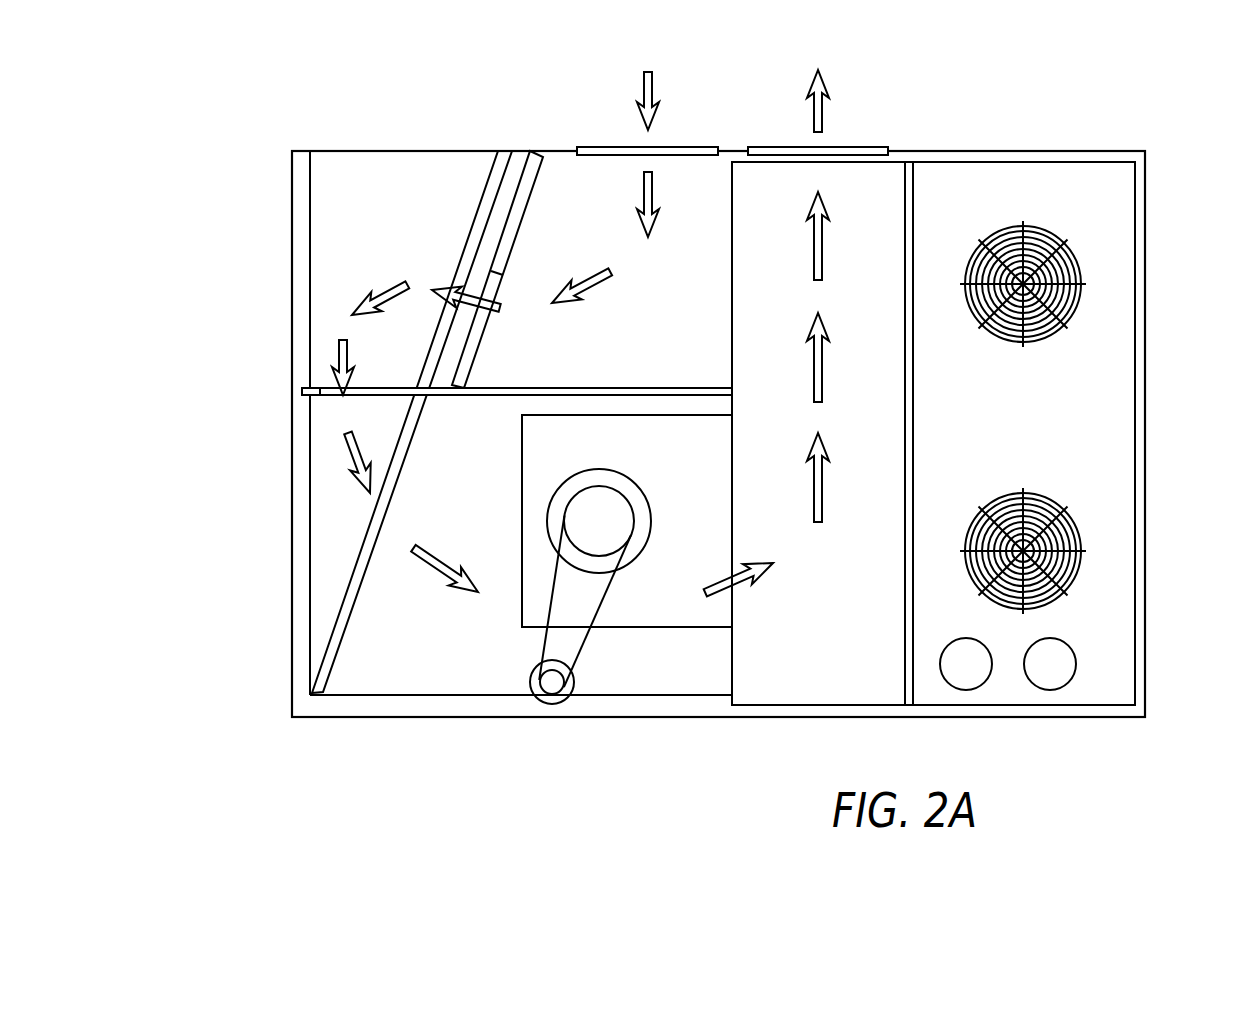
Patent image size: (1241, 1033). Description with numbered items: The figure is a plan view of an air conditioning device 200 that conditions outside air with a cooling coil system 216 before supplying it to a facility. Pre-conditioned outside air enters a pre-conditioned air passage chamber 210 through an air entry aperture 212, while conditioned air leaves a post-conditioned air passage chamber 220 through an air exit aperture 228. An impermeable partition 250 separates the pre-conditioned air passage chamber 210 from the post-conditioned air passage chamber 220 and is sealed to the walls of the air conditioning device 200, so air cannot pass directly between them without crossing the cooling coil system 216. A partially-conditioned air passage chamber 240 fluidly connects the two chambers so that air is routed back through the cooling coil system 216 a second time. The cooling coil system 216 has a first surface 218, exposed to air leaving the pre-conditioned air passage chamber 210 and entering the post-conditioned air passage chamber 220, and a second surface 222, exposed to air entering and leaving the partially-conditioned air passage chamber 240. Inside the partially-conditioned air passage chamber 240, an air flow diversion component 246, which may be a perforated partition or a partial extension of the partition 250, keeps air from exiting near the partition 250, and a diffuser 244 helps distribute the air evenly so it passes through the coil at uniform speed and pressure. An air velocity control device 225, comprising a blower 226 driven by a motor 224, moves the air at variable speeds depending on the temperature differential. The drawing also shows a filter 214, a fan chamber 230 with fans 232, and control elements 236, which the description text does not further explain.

The air conditioning device 200 is at (228, 174).
The pre-conditioned air passage chamber 210 is at (557, 220).
The air entry aperture 212 is at (650, 150).
The filter 214 is at (525, 178).
The cooling coil system 216 is at (367, 532).
The first surface 218 is at (348, 663).
The post-conditioned air passage chamber 220 is at (487, 650).
The second surface 222 is at (315, 665).
The motor 224 is at (556, 691).
The air velocity control device 225 is at (602, 652).
The blower 226 is at (613, 520).
The air exit aperture 228 is at (830, 150).
The fan chamber 230 is at (1115, 487).
The fan 232 is at (1072, 570).
The control knob 236 is at (1052, 675).
The partially-conditioned air passage chamber 240 is at (338, 210).
The diffuser 244 is at (318, 390).
The air flow diversion component 246 is at (382, 398).
The partition 250 is at (628, 390).